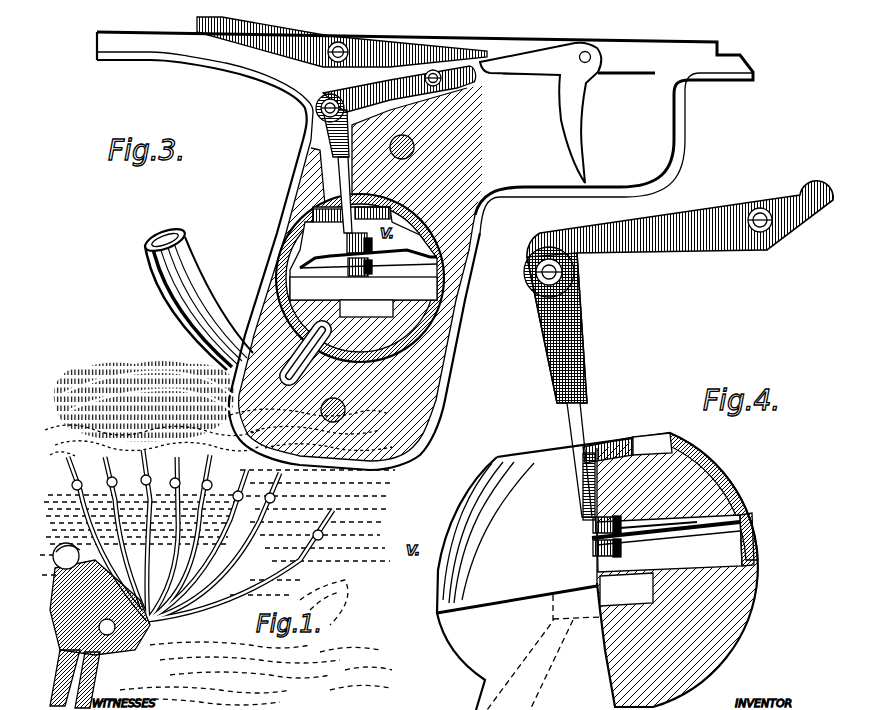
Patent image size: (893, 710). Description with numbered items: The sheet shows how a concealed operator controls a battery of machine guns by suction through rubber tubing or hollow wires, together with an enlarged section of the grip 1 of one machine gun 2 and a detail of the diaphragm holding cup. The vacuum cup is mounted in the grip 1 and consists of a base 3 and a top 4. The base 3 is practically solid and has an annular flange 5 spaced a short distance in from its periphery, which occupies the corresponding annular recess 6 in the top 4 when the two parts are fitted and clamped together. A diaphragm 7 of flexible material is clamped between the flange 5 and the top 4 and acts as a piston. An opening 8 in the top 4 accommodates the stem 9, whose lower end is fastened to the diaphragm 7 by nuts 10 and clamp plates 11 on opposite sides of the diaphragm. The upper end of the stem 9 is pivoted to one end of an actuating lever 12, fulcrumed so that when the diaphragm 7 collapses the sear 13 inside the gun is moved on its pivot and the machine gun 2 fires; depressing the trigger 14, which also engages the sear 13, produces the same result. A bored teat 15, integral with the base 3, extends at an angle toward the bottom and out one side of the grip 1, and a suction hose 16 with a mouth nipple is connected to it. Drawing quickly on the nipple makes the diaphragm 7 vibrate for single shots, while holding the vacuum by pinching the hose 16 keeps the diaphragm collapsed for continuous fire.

In FIG. 3, the grip 1 is at (448, 381).
In FIG. 3, the machine gun 2 is at (674, 50).
In FIG. 1, the machine gun 2 is at (205, 475).
In FIG. 3, the base 3 is at (293, 306).
In FIG. 4, the base 3 is at (710, 633).
In FIG. 3, the top 4 is at (307, 233).
In FIG. 4, the top 4 is at (722, 487).
In FIG. 3, the annular flange 5 is at (292, 288).
In FIG. 4, the annular flange 5 is at (750, 535).
In FIG. 3, the annular recess 6 is at (294, 276).
In FIG. 4, the annular recess 6 is at (748, 517).
In FIG. 3, the diaphragm 7 is at (395, 252).
In FIG. 4, the diaphragm 7 is at (695, 522).
In FIG. 3, the opening 8 is at (348, 230).
In FIG. 4, the opening 8 is at (630, 442).
In FIG. 3, the stem 9 is at (322, 159).
In FIG. 4, the stem 9 is at (583, 416).
In FIG. 3, the nuts 10 is at (347, 244).
In FIG. 4, the nuts 10 is at (608, 518).
In FIG. 3, the clamp plates 11 is at (332, 266).
In FIG. 4, the clamp plates 11 is at (652, 526).
In FIG. 3, the actuating lever 12 is at (340, 93).
In FIG. 4, the actuating lever 12 is at (702, 243).
In FIG. 3, the sear 13 is at (370, 38).
In FIG. 3, the trigger 14 is at (590, 125).
In FIG. 3, the teat 15 is at (230, 370).
In FIG. 4, the teat 15 is at (478, 694).
In FIG. 3, the hose 16 is at (158, 284).
In FIG. 1, the hose 16 is at (200, 535).